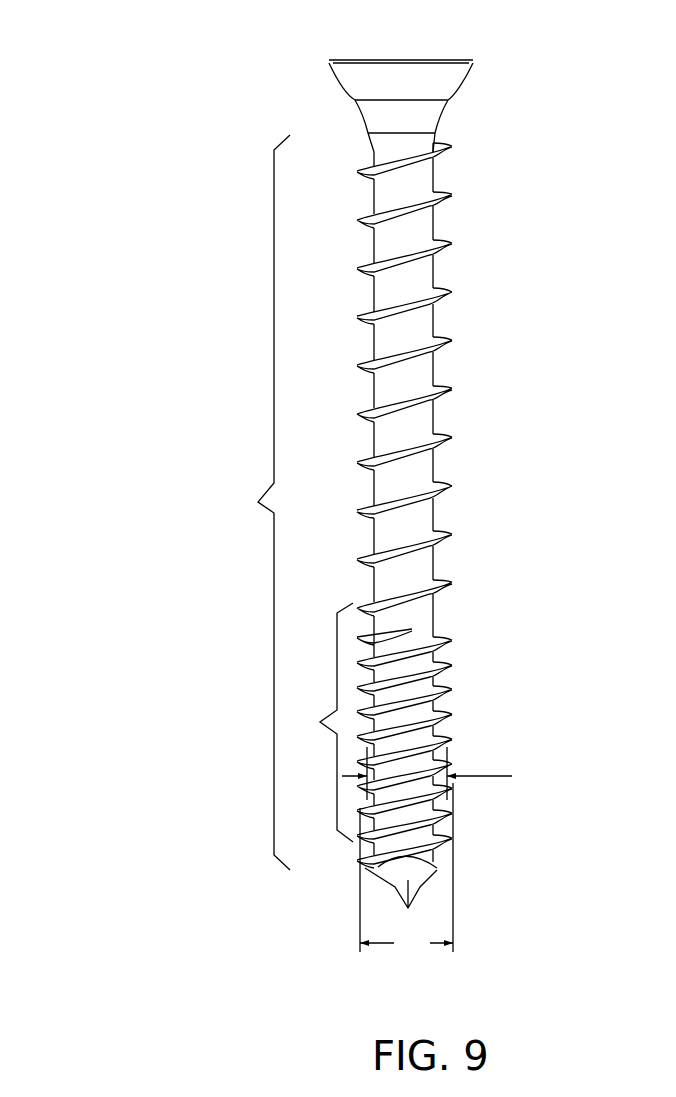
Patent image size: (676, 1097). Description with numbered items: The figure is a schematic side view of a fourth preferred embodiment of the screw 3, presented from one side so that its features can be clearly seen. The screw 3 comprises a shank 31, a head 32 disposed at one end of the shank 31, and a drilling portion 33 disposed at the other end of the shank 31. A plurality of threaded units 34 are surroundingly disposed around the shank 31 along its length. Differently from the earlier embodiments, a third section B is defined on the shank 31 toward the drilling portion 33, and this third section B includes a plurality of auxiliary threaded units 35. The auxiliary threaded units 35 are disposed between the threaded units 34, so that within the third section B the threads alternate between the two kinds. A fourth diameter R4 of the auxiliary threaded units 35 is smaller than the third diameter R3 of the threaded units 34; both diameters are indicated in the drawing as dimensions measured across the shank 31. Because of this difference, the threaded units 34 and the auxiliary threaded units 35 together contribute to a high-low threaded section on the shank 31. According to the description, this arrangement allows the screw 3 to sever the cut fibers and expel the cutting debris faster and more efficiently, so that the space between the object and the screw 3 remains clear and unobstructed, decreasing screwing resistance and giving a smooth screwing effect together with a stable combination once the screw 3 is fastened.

The screw 3 is at (137, 135).
The shank 31 is at (440, 467).
The head 32 is at (473, 60).
The drilling portion 33 is at (443, 857).
The threaded units 34 is at (259, 502).
The auxiliary threaded units 35 is at (440, 677).
The third section B is at (326, 722).
The third diameter R3 is at (406, 869).
The fourth diameter R4 is at (427, 773).